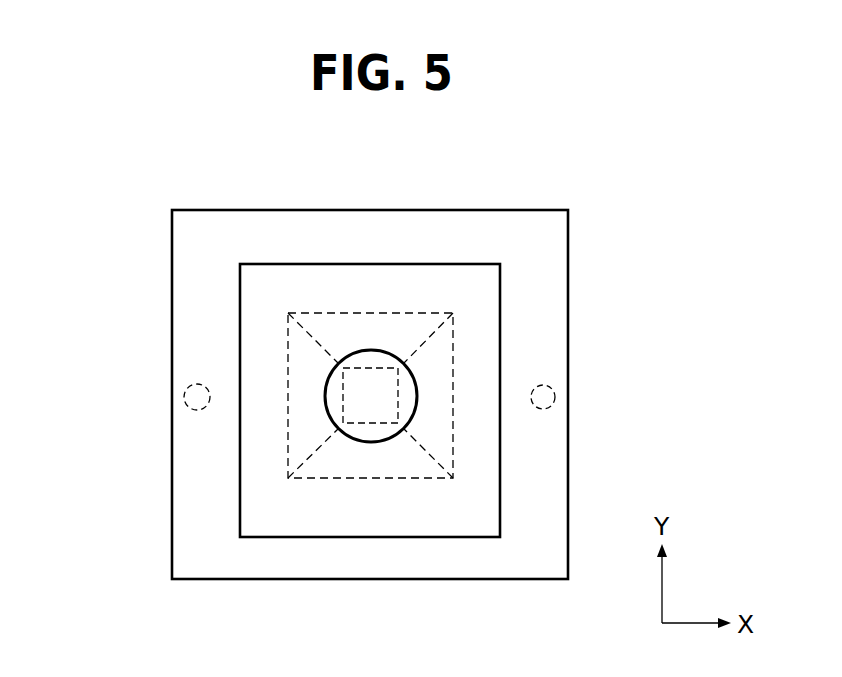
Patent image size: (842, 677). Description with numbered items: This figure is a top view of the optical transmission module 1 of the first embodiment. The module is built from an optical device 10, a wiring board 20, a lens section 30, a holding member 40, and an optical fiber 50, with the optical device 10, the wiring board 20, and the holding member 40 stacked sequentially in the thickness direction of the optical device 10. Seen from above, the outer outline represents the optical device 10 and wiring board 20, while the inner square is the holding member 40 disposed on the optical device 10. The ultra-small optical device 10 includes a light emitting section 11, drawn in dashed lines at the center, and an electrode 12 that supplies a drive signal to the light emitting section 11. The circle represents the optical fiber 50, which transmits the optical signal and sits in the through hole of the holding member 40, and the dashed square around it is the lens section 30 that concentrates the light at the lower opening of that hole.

The optical transmission module 1 is at (670, 210).
The optical device 10 is at (317, 394).
The wiring board 20 is at (172, 321).
The light emitting section 11 is at (367, 423).
The electrode 12 is at (184, 409).
The lens section 30 is at (453, 446).
The holding member 40 is at (500, 317).
The optical fiber 50 is at (417, 385).